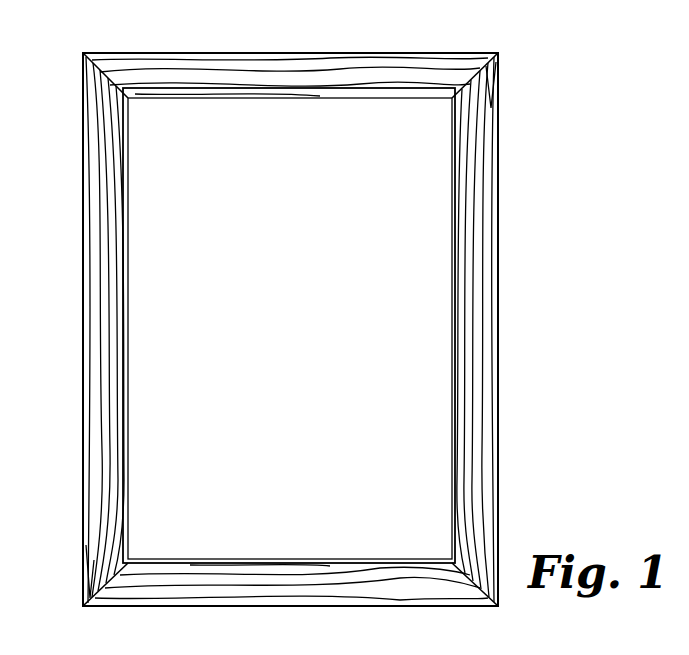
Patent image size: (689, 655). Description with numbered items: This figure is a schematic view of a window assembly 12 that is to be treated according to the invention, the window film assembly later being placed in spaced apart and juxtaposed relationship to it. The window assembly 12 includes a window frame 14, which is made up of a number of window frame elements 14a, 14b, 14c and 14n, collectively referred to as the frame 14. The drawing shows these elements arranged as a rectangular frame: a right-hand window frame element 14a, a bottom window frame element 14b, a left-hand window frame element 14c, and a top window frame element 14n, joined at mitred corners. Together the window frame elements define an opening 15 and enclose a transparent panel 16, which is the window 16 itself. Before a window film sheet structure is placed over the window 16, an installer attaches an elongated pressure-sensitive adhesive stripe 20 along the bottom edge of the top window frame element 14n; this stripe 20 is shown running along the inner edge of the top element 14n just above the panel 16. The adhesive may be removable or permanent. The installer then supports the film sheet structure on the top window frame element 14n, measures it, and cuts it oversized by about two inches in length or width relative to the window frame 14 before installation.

The window assembly 12 is at (503, 236).
The window frame 14 is at (490, 413).
The window frame element 14a is at (499, 330).
The window frame element 14b is at (265, 607).
The window frame element 14c is at (83, 318).
The top window frame element 14n is at (202, 53).
The opening 15 is at (128, 378).
The transparent panel 16 is at (301, 339).
The pressure-sensitive adhesive stripe 20 is at (307, 95).